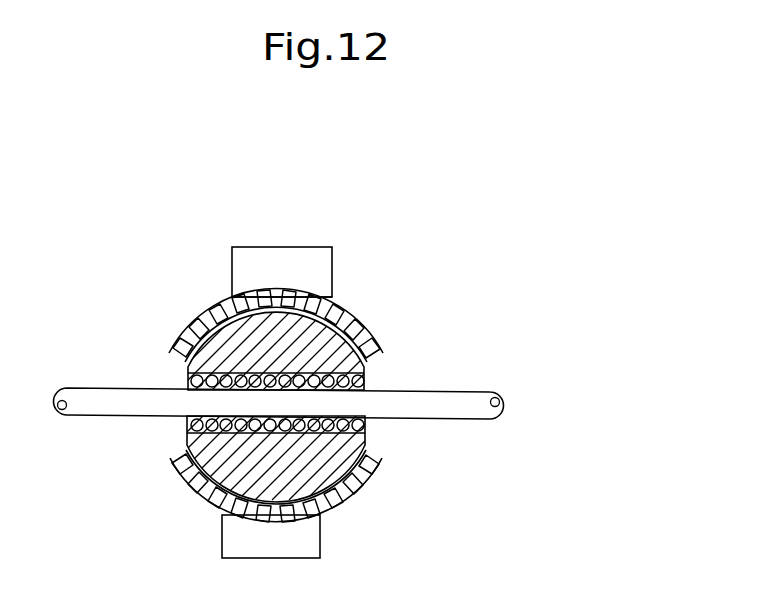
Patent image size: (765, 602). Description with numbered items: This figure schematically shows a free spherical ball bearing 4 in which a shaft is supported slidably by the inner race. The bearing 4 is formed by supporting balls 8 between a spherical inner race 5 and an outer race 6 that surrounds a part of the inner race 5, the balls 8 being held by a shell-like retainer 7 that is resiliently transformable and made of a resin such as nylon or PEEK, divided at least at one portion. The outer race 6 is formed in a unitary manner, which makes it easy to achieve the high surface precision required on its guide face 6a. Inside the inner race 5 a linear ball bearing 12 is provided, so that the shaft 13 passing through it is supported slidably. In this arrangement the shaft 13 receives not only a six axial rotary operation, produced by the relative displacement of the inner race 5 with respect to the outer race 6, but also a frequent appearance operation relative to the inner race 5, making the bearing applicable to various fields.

The free spherical ball bearing 4 is at (473, 227).
The spherical inner race 5 is at (366, 372).
The outer race 6 is at (232, 265).
The guide face 6a is at (298, 275).
The retainer 7 is at (180, 345).
The balls 8 is at (207, 307).
The linear ball bearing 12 is at (365, 425).
The shaft 13 is at (478, 400).